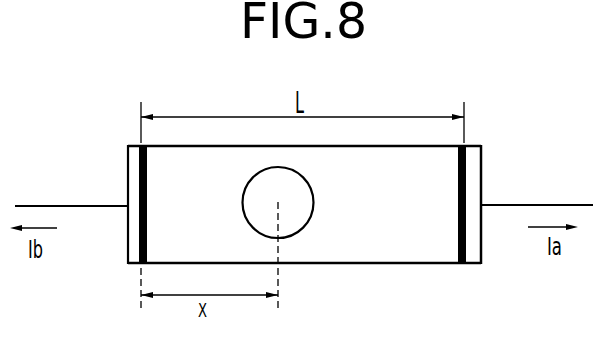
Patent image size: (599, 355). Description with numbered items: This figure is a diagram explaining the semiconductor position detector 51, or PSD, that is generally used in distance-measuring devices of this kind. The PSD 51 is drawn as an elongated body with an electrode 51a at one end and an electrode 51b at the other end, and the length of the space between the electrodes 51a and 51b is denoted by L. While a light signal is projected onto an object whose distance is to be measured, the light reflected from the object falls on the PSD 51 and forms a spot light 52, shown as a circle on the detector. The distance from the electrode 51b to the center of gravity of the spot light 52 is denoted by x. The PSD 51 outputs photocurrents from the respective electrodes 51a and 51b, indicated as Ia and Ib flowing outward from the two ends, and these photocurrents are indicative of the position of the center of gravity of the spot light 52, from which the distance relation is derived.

The semiconductor position detector 51 is at (400, 264).
The electrode 51a is at (481, 180).
The electrode 51b is at (128, 180).
The spot light 52 is at (309, 223).